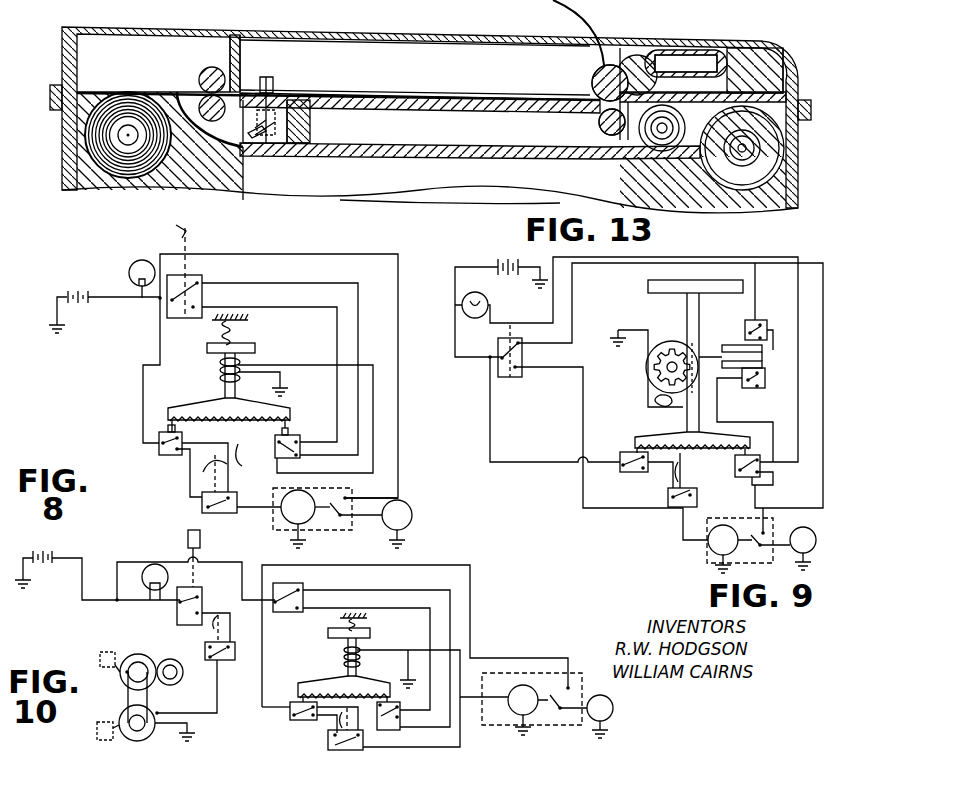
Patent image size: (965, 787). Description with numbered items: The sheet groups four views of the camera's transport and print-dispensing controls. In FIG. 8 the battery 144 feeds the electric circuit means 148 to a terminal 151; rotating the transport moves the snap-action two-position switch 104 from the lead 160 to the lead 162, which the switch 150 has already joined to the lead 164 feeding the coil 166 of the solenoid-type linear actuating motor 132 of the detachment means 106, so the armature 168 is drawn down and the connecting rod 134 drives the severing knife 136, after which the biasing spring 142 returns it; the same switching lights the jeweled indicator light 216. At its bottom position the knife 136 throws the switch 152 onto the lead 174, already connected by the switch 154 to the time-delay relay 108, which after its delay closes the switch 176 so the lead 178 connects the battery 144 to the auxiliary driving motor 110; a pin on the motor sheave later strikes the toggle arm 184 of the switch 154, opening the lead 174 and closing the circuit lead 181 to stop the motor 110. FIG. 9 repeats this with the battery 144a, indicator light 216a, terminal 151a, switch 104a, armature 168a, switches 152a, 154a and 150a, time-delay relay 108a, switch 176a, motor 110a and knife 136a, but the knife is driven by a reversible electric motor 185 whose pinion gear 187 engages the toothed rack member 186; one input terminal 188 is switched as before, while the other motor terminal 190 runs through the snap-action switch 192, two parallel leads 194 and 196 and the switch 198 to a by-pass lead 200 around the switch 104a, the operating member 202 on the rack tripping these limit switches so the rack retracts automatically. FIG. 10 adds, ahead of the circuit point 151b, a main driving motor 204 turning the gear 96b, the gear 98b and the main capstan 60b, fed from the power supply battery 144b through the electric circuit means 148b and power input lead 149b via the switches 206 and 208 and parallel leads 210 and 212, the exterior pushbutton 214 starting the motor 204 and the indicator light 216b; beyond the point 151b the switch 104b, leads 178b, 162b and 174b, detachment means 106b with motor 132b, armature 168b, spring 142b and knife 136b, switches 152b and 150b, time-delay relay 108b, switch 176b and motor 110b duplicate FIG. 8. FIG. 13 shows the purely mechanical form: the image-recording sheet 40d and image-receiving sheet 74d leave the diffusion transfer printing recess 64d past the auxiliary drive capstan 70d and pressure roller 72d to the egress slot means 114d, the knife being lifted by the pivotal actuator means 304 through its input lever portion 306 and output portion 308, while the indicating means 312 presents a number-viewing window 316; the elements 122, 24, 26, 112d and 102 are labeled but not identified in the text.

In FIG. 13, the housing 122 is at (663, 35).
In FIG. 13, the input lever portion 306 is at (185, 175).
In FIG. 13, the end-of-main-transporting-movement-indicating means 312 is at (128, 89).
In FIG. 13, the number-viewing window 316 is at (190, 2).
In FIG. 13, the tape 24 is at (183, 105).
In FIG. 13, the spacing 26 is at (268, 48).
In FIG. 13, the output portion 308 is at (290, 127).
In FIG. 13, the mechanical actuator means 304 is at (253, 152).
In FIG. 13, the diffusion transfer printing recess 64d is at (400, 92).
In FIG. 13, the auxiliary drive capstan 70d is at (470, 140).
In FIG. 13, the image-recording sheet 40d is at (350, 157).
In FIG. 13, the image-receiving sheet 74d is at (545, 0).
In FIG. 13, the capstan 112d is at (607, 63).
In FIG. 13, the pressure roller 72d is at (593, 78).
In FIG. 13, the egress slot means 114d is at (615, 40).
In FIG. 8, the battery 144 is at (82, 283).
In FIG. 8, the electric circuit means 148 is at (116, 304).
In FIG. 8, the terminal 151 is at (160, 303).
In FIG. 8, the jeweled indicator light 216 is at (129, 266).
In FIG. 8, the actuating link 102 is at (180, 238).
In FIG. 8, the snap-action two-position switch 104 is at (206, 277).
In FIG. 8, the lead 160 is at (293, 282).
In FIG. 8, the lead 162 is at (288, 307).
In FIG. 8, the lead 164 is at (373, 365).
In FIG. 8, the solenoid-type linear actuating motor 132 is at (249, 372).
In FIG. 8, the connecting rod 134 is at (234, 390).
In FIG. 8, the biasing spring 142 is at (232, 333).
In FIG. 8, the armature 168 is at (256, 351).
In FIG. 8, the coil 166 is at (213, 372).
In FIG. 8, the detachment means 106 is at (208, 377).
In FIG. 8, the severing knife 136 is at (280, 417).
In FIG. 8, the two-position snap-action switch 152 is at (156, 452).
In FIG. 8, the lead 174 is at (187, 473).
In FIG. 8, the toggle arm 184 is at (234, 442).
In FIG. 8, the circuit lead 181 is at (258, 445).
In FIG. 8, the two-position snap-action switch 154 is at (199, 508).
In FIG. 8, the switch 150 is at (275, 452).
In FIG. 8, the time-delay relay 108 is at (286, 492).
In FIG. 8, the switch 176 is at (333, 525).
In FIG. 8, the lead 178 is at (397, 492).
In FIG. 8, the auxiliary motor means 110 is at (414, 512).
In FIG. 9, the battery 144a is at (512, 257).
In FIG. 9, the jeweled indicator light 216a is at (489, 305).
In FIG. 9, the terminal 151a is at (490, 358).
In FIG. 9, the switch 104a is at (516, 332).
In FIG. 9, the armature 168a is at (652, 283).
In FIG. 9, the by-pass lead 200 is at (578, 316).
In FIG. 9, the pinion gear 187 is at (650, 325).
In FIG. 9, the reversible electric motor 185 is at (677, 338).
In FIG. 9, the input terminal 188 is at (647, 377).
In FIG. 9, the motor terminal 190 is at (652, 398).
In FIG. 9, the operating member 202 is at (712, 347).
In FIG. 9, the snap-action two-position switch 198 is at (787, 310).
In FIG. 9, the two-position snap-action switch 192 is at (748, 392).
In FIG. 9, the toothed rack member 186 is at (698, 405).
In FIG. 9, the parallel lead 196 is at (783, 367).
In FIG. 9, the parallel lead 194 is at (765, 336).
In FIG. 9, the severing knife 136a is at (657, 432).
In FIG. 9, the switch 152a is at (646, 476).
In FIG. 9, the switch 154a is at (664, 502).
In FIG. 9, the switch 150a is at (733, 467).
In FIG. 9, the time-delay relay 108a is at (704, 549).
In FIG. 9, the switch 176a is at (750, 548).
In FIG. 9, the auxiliary driving motor 110a is at (826, 527).
In FIG. 10, the power supply battery 144b is at (38, 532).
In FIG. 10, the electric circuit means 148b is at (84, 603).
In FIG. 10, the power input lead 149b is at (107, 608).
In FIG. 10, the jeweled indicator light 216b is at (157, 540).
In FIG. 10, the exterior pushbutton 214 is at (201, 535).
In FIG. 10, the parallel lead 212 is at (217, 585).
In FIG. 10, the two-position snap-action switch 206 is at (173, 615).
In FIG. 10, the parallel lead 210 is at (207, 640).
In FIG. 10, the gear 96b is at (165, 652).
In FIG. 10, the main capstan 60b is at (170, 683).
In FIG. 10, the gear 98b is at (160, 718).
In FIG. 10, the main electrically energizable driving motor 204 is at (153, 740).
In FIG. 10, the switch 104b is at (99, 652).
In FIG. 10, the two-position snap-action switch 208 is at (96, 735).
In FIG. 10, the lead 178b is at (418, 566).
In FIG. 10, the terminal 151b is at (258, 603).
In FIG. 10, the detachment means 106b is at (377, 592).
In FIG. 10, the lead 162b is at (365, 612).
In FIG. 10, the biasing spring 142b is at (357, 623).
In FIG. 10, the armature 168b is at (340, 620).
In FIG. 10, the solenoid-type linear actuating motor 132b is at (362, 643).
In FIG. 10, the severing knife 136b is at (360, 687).
In FIG. 10, the switch 152b is at (291, 714).
In FIG. 10, the switch 150b is at (397, 730).
In FIG. 10, the lead 174b is at (327, 742).
In FIG. 10, the time-delay relay 108b is at (560, 642).
In FIG. 10, the switch 176b is at (552, 717).
In FIG. 10, the auxiliary driving motor 110b is at (587, 723).